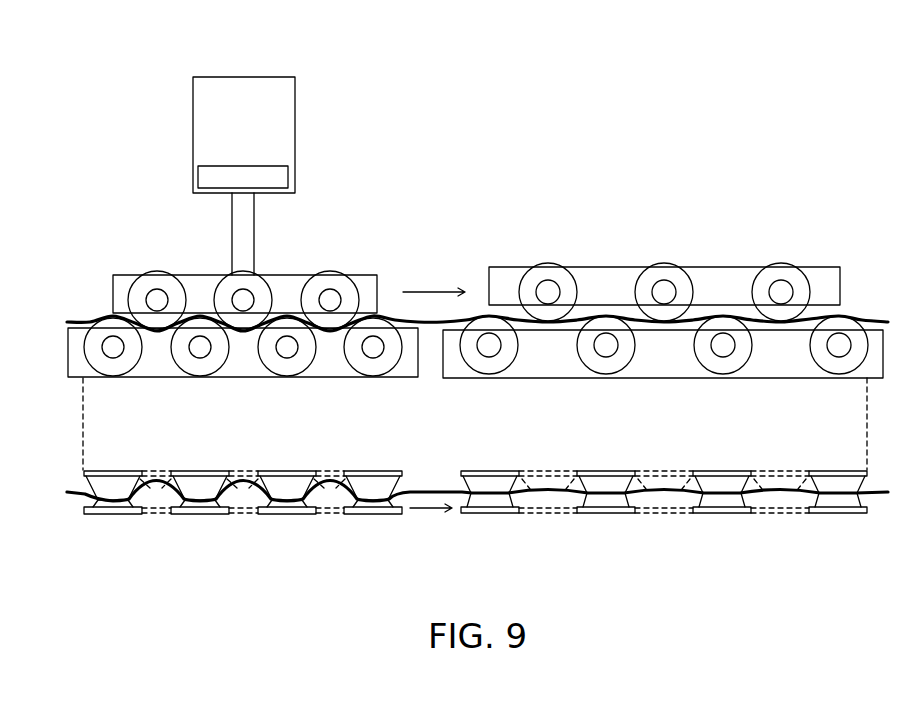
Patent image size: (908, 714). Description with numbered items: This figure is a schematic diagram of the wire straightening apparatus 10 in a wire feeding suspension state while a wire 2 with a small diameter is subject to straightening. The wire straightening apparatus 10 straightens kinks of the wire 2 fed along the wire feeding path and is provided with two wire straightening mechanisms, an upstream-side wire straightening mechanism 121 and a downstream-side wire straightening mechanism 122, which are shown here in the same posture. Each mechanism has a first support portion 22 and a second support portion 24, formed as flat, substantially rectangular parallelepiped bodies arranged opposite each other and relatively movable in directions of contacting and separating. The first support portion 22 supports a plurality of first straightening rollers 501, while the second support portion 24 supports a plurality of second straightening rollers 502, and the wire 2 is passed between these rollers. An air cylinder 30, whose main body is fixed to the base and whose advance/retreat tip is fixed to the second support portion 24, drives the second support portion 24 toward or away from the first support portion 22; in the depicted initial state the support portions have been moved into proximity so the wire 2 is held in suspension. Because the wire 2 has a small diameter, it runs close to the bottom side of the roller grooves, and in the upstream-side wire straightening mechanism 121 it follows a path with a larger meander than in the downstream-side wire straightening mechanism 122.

The wire straightening apparatus 10 is at (122, 82).
The upstream-side wire straightening mechanism 121 is at (122, 173).
The downstream-side wire straightening mechanism 122 is at (511, 174).
The air cylinder 30 is at (296, 126).
The second support portion 24 is at (117, 282).
The first support portion 22 is at (77, 333).
The wire 2 is at (432, 330).
The first straightening roller 501 is at (193, 368).
The second straightening roller 502 is at (225, 271).